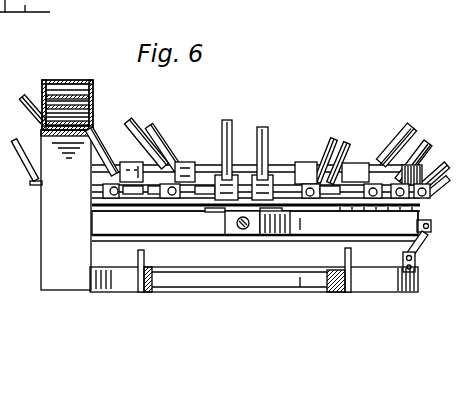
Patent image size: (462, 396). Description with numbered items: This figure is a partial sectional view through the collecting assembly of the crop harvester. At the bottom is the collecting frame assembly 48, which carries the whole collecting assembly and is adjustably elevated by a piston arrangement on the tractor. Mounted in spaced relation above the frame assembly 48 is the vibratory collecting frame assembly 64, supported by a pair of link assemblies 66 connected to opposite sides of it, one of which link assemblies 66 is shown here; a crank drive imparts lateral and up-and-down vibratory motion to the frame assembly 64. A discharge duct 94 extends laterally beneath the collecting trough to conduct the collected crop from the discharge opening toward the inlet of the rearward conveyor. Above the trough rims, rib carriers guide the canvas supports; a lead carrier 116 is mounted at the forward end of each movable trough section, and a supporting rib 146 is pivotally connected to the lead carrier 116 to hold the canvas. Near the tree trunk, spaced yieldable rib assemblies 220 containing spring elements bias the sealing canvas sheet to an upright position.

The collecting frame assembly 48 is at (374, 296).
The vibratory collecting frame assembly 64 is at (258, 224).
The link assembly 66 is at (424, 254).
The discharge duct 94 is at (103, 238).
The lead carrier 116 is at (273, 163).
The supporting rib 146 is at (268, 140).
The yieldable rib assembly 220 is at (419, 156).